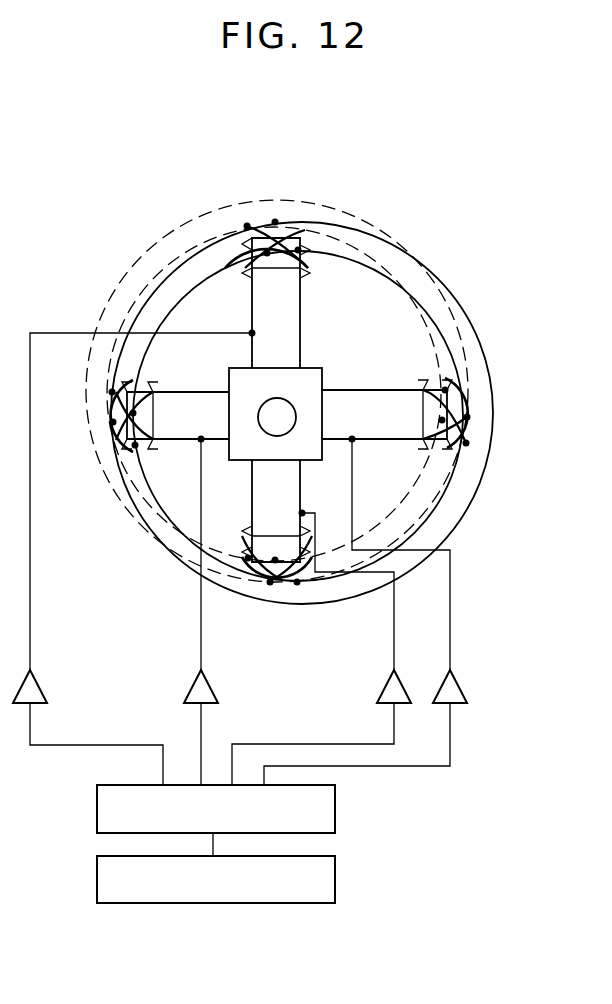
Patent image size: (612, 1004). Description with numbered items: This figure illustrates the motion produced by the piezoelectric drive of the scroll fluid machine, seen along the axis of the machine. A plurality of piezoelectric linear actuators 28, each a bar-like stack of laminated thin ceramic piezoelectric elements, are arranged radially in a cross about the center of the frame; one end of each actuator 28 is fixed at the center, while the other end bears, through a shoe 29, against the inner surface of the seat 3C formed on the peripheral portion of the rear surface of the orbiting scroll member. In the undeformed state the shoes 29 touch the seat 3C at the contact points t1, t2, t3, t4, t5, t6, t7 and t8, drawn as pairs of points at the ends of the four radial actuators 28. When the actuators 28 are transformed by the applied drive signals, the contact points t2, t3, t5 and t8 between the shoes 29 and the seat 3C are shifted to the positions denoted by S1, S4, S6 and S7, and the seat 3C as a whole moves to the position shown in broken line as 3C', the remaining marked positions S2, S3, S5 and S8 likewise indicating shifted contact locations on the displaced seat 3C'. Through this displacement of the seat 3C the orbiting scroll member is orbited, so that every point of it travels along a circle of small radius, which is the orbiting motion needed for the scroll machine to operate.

The seat 3C is at (332, 413).
The shifted position of seat 3C' is at (277, 379).
The linear actuator 28 is at (290, 340).
The shoe 29 is at (286, 381).
The shifted contact point S1 is at (275, 222).
The shifted contact point S2 is at (247, 226).
The shifted contact point S3 is at (112, 392).
The shifted contact point S4 is at (113, 422).
The shifted contact point S5 is at (248, 558).
The shifted contact point S6 is at (275, 560).
The shifted contact point S7 is at (442, 420).
The shifted contact point S8 is at (445, 390).
The contact point t1 is at (298, 250).
The contact point t2 is at (267, 253).
The contact point t3 is at (133, 413).
The contact point t4 is at (135, 445).
The contact point t5 is at (270, 582).
The contact point t6 is at (297, 582).
The contact point t7 is at (466, 443).
The contact point t8 is at (467, 417).